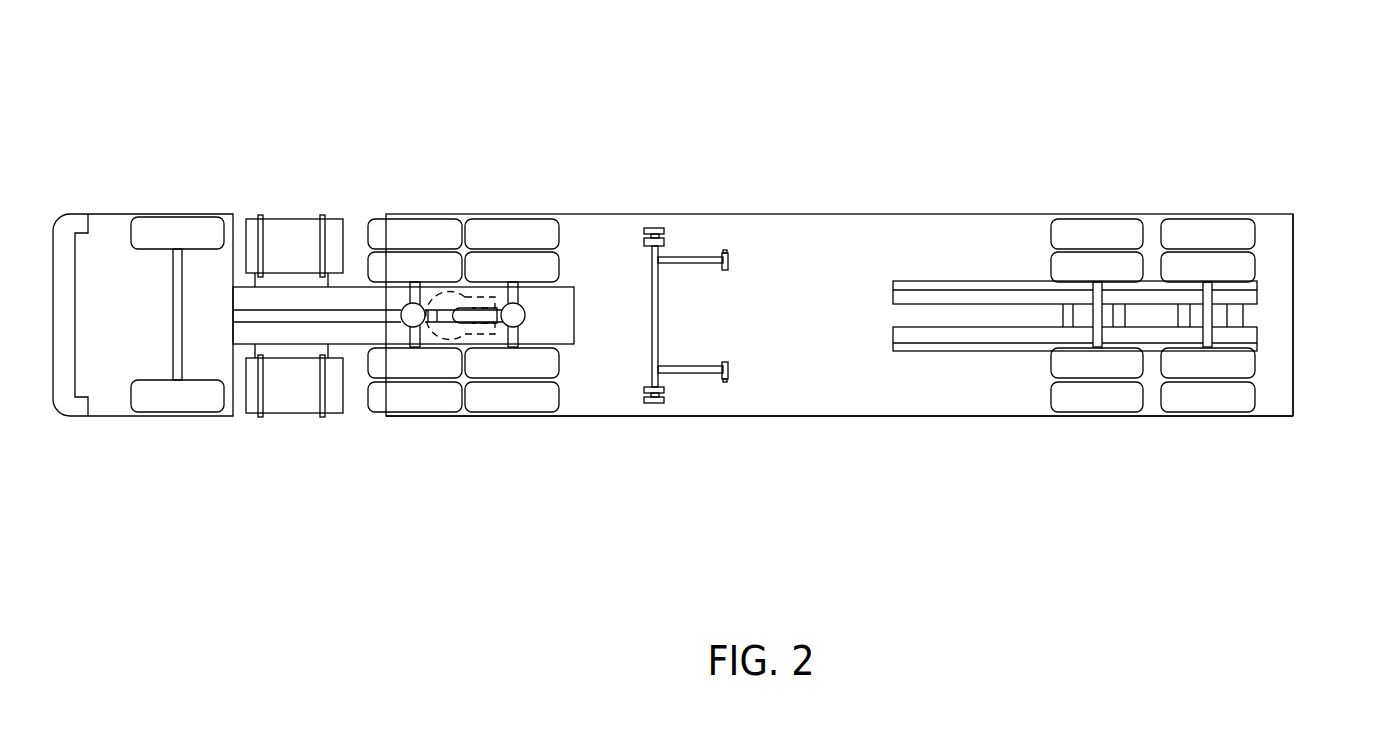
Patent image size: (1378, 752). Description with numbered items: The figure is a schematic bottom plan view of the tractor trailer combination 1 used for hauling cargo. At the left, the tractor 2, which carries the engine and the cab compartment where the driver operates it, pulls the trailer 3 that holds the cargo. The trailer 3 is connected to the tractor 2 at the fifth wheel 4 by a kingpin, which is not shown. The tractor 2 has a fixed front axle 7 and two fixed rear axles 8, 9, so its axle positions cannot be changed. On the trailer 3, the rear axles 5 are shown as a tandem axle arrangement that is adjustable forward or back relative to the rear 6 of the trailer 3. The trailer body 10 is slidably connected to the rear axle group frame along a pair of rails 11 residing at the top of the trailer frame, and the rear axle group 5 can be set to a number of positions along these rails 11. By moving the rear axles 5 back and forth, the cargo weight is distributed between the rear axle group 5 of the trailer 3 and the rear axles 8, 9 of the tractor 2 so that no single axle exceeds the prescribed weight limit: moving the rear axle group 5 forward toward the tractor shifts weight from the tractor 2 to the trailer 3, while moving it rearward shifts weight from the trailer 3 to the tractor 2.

The tractor trailer combination 1 is at (652, 172).
The tractor 2 is at (196, 176).
The trailer 3 is at (743, 214).
The fifth wheel 4 is at (463, 334).
The rear axles 5 is at (1085, 218).
The rear of trailer 6 is at (1293, 297).
The front axle of tractor 7 is at (159, 217).
The rear axle of tractor 8 is at (410, 218).
The rear axle of tractor 9 is at (517, 218).
The trailer body 10 is at (780, 417).
The rails 11 is at (952, 352).